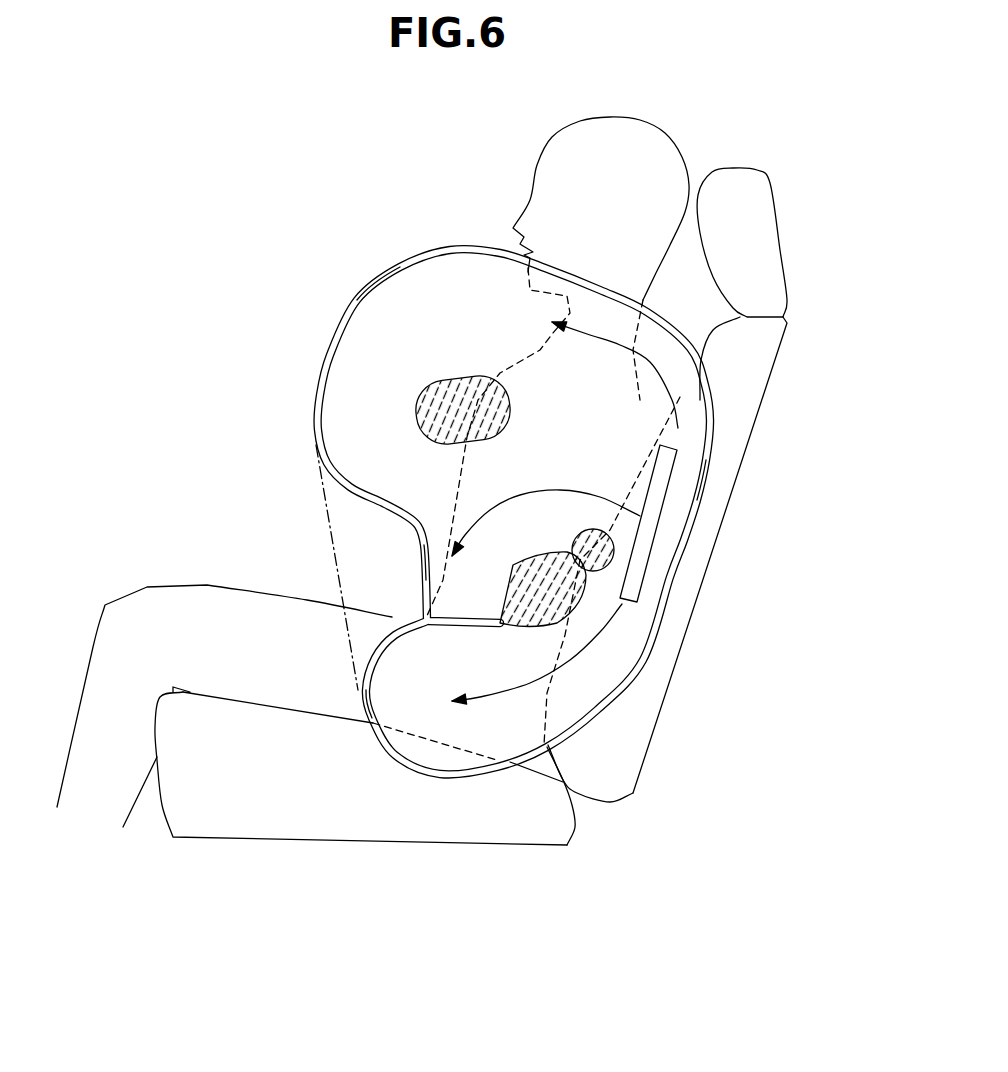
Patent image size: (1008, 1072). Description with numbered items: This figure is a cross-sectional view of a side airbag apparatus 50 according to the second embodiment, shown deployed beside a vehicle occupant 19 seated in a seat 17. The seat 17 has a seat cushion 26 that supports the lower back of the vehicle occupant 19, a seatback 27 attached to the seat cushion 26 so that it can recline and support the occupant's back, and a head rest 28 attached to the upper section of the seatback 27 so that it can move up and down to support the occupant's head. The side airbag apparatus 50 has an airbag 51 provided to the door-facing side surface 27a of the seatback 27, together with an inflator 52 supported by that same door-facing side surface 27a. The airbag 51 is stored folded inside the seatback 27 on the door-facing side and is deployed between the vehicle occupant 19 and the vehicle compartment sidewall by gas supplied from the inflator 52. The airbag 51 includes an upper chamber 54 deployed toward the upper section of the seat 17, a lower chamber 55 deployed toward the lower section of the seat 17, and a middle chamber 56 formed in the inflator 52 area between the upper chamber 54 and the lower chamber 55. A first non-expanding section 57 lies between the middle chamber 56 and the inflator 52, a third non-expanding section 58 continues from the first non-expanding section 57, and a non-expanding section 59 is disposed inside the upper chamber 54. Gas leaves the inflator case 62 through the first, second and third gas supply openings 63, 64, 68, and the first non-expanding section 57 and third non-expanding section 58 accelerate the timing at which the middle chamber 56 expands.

The seat 17 is at (511, 504).
The vehicle occupant 19 is at (623, 122).
The seat cushion 26 is at (267, 827).
The seatback 27 is at (707, 559).
The door-facing side surface 27a is at (753, 399).
The head rest 28 is at (762, 240).
The side airbag apparatus 50 is at (489, 426).
The airbag 51 is at (212, 552).
The inflator 52 is at (673, 483).
The upper chamber 54 is at (350, 437).
The lower chamber 55 is at (397, 677).
The middle chamber 56 is at (412, 578).
The first non-expanding section 57 is at (613, 548).
The third non-expanding section 58 is at (555, 553).
The non-expanding section 59 is at (452, 402).
The inflator case 62 is at (665, 512).
The first gas supply opening 63 is at (675, 430).
The second gas supply opening 64 is at (627, 610).
The third gas supply opening 68 is at (638, 515).